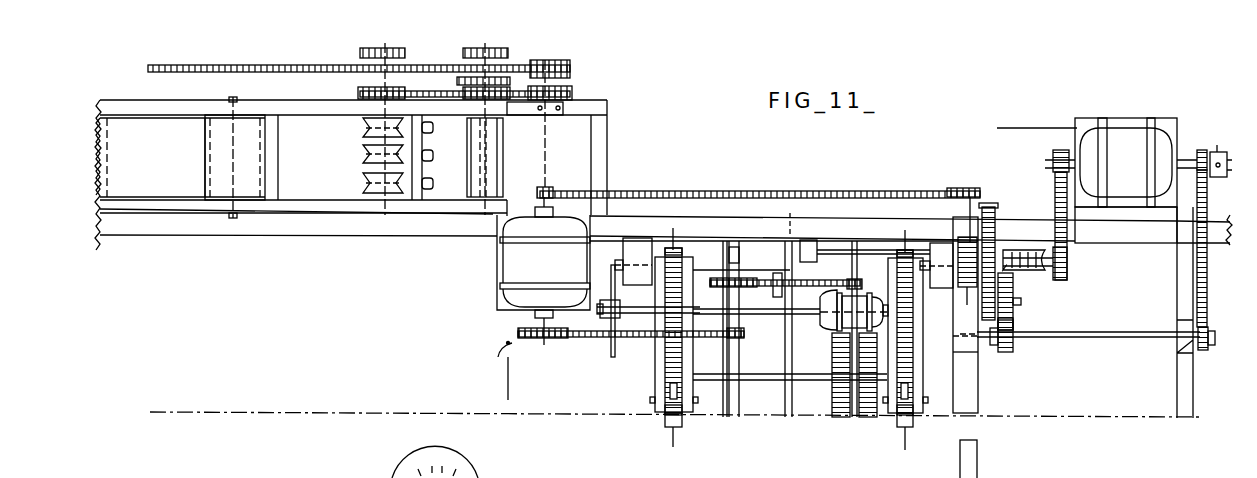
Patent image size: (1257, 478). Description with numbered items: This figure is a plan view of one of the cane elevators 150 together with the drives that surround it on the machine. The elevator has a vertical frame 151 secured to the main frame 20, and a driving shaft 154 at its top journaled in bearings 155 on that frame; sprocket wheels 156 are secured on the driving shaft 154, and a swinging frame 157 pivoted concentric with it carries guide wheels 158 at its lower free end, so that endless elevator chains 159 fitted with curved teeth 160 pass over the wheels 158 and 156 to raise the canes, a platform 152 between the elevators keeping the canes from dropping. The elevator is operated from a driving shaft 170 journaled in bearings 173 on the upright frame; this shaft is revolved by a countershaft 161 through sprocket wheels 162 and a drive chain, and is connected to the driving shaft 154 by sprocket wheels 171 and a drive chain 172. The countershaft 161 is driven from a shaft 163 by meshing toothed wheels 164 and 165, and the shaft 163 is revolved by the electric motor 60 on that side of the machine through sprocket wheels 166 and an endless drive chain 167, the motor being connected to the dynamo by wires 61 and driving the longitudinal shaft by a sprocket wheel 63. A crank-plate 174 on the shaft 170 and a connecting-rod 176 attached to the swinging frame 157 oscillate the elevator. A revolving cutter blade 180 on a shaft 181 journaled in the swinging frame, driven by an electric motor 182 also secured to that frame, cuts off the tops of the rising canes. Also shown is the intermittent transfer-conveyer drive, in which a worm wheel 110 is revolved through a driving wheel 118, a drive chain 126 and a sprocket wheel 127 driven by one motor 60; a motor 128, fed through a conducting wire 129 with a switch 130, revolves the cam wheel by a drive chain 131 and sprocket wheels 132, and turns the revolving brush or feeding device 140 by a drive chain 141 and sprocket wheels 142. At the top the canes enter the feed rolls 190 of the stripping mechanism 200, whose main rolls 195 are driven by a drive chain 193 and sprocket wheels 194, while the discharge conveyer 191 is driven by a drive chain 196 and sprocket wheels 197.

The frame 20 is at (1215, 242).
The electric motor 60 is at (1118, 148).
The wires 61 is at (1053, 127).
The sprocket wheel 63 is at (1215, 150).
The worm wheel 110 is at (1020, 250).
The driving wheel 118 is at (1068, 266).
The drive chain 126 is at (1057, 213).
The sprocket wheel 127 is at (1052, 157).
The motor 128 is at (543, 271).
The conducting wire 129 is at (508, 397).
The switch 130 is at (498, 350).
The drive chain 131 is at (690, 191).
The sprocket wheels 132 is at (579, 177).
The revolving brush or feeding device 140 is at (848, 400).
The drive chain 141 is at (653, 340).
The sprocket wheels 142 is at (545, 340).
The elevator 150 is at (784, 329).
The vertical frame 151 is at (605, 230).
The platform or support 152 is at (795, 378).
The driving shaft 154 is at (713, 270).
The bearings 155 is at (943, 262).
The sprocket wheels 156 is at (676, 250).
The swinging frame 157 is at (657, 376).
The guide wheels 158 is at (662, 423).
The endless elevator chains or bands 159 is at (680, 428).
The curved teeth 160 is at (673, 448).
The countershaft 161 is at (1021, 302).
The sprocket wheels 162 is at (1013, 325).
The shaft 163 is at (1118, 334).
The toothed wheel 164 is at (1013, 290).
The toothed wheel 165 is at (1010, 353).
The sprocket wheels 166 is at (1188, 158).
The endless drive chain 167 is at (1203, 272).
The driving shaft 170 is at (827, 253).
The sprocket wheels 171 is at (1010, 477).
The drive chain 172 is at (967, 283).
The bearings 173 is at (808, 245).
The crank-plate 174 is at (787, 266).
The connecting-rod 176 is at (782, 298).
The revolving cutter blade 180 is at (611, 352).
The shaft 181 is at (648, 308).
The electric motor 182 is at (853, 313).
The feed rolls 190 is at (485, 163).
The discharge conveyer 191 is at (183, 183).
The drive chain 193 is at (572, 96).
The sprocket wheels 194 is at (357, 93).
The main rolls 195 is at (366, 190).
The drive chain 196 is at (223, 50).
The sprocket wheels 197 is at (565, 62).
The stripping mechanism 200 is at (430, 200).